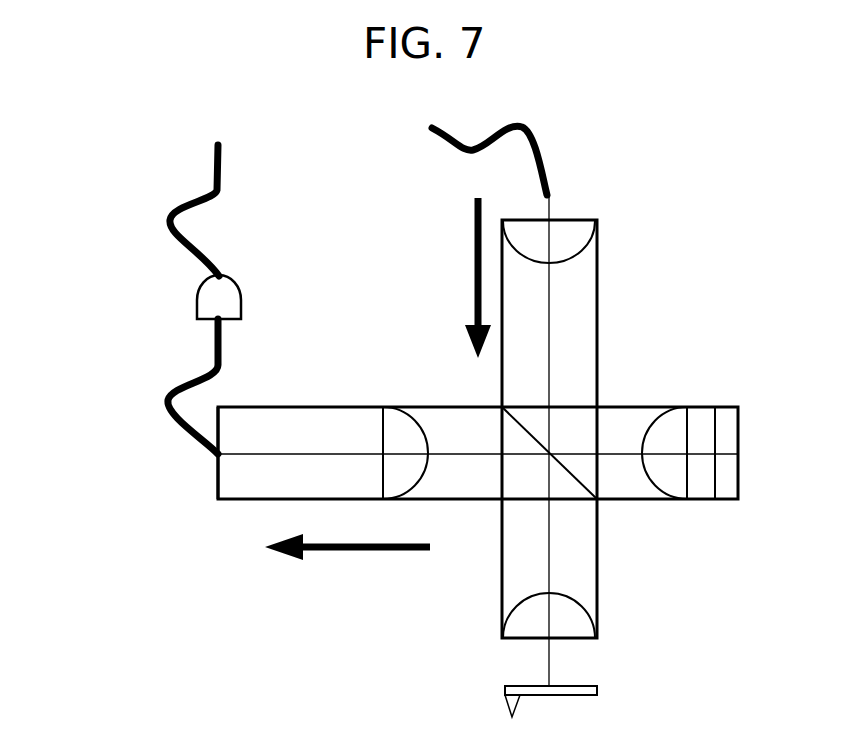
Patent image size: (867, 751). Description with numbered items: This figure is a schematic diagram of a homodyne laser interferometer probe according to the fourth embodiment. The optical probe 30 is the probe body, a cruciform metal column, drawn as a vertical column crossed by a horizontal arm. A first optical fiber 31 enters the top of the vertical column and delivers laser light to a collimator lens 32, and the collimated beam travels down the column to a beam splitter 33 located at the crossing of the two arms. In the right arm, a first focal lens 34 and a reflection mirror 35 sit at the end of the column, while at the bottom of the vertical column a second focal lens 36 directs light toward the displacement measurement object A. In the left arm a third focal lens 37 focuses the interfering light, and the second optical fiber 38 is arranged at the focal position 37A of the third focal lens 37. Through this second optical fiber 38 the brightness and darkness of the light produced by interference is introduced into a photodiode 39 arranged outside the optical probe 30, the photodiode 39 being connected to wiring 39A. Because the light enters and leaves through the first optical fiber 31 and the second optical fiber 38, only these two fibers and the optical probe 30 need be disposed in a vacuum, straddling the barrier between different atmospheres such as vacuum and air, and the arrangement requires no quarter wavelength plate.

The optical probe 30 is at (598, 293).
The first optical fiber 31 is at (546, 166).
The collimator lens 32 is at (580, 232).
The beam splitter 33 is at (573, 406).
The first focal lens 34 is at (677, 485).
The reflection mirror 35 is at (728, 485).
The second focal lens 36 is at (513, 630).
The third focal lens 37 is at (393, 423).
The focus of the third focal lens 37A is at (218, 454).
The second optical fiber 38 is at (170, 398).
The photodiode 39 is at (197, 302).
The wiring 39A is at (206, 193).
The displacement measurement object A is at (505, 688).